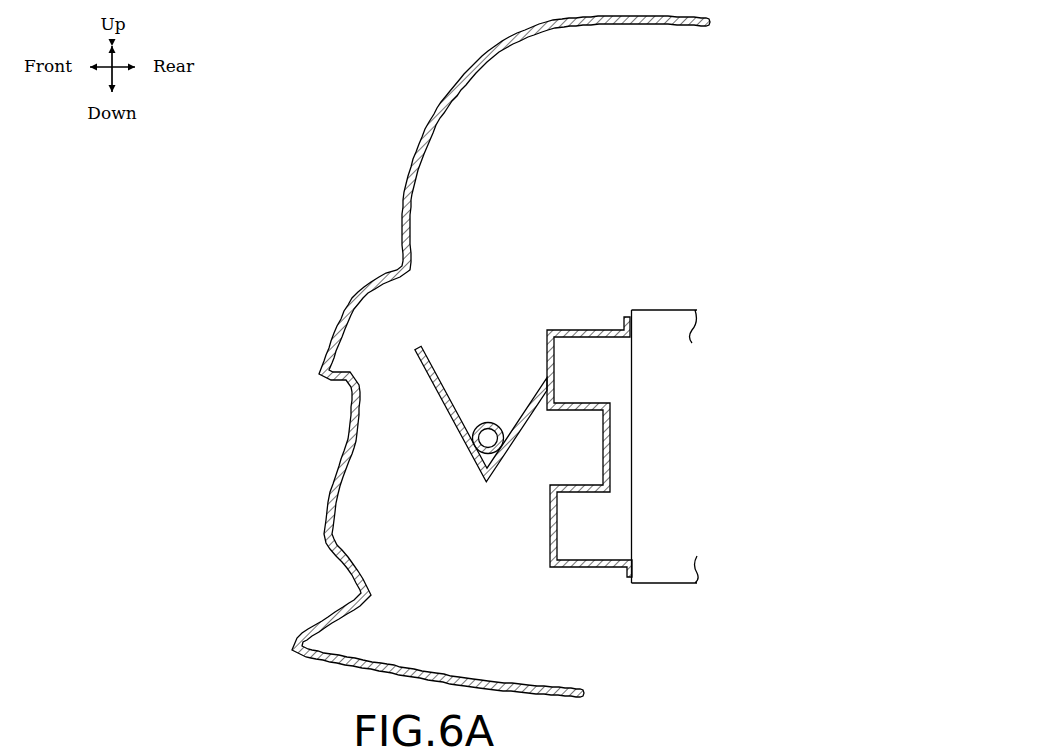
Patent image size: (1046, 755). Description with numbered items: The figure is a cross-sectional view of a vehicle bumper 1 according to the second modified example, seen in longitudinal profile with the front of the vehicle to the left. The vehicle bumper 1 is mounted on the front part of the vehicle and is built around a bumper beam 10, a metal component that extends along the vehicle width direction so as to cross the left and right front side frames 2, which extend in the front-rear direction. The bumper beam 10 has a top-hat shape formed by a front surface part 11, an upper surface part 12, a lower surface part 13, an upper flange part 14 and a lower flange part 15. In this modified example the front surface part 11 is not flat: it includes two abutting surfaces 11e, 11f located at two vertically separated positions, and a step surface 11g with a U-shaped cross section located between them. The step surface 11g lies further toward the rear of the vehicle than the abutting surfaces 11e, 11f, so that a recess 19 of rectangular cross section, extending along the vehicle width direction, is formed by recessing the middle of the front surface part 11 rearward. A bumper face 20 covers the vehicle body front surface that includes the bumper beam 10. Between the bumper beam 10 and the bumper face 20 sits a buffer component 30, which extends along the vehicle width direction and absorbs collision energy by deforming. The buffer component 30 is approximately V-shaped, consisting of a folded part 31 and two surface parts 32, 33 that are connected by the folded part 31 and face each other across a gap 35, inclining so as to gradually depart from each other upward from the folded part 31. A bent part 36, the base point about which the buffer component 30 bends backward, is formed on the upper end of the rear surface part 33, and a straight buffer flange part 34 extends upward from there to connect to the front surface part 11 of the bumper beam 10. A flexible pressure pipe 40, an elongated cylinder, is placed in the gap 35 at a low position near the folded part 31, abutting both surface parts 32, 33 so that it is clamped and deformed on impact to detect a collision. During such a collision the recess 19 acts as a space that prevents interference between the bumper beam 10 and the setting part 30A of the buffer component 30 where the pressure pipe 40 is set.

The vehicle bumper 1 is at (253, 61).
The front side frame 2 is at (680, 308).
The bumper beam 10 is at (565, 316).
The front surface part 11 is at (557, 345).
The abutting surface 11e is at (557, 368).
The abutting surface 11f is at (560, 533).
The step surface 11g is at (612, 442).
The upper surface part 12 is at (600, 328).
The lower surface part 13 is at (592, 568).
The upper flange part 14 is at (630, 325).
The lower flange part 15 is at (632, 570).
The recess 19 is at (606, 474).
The bumper face 20 is at (345, 408).
The buffer component 30 is at (442, 442).
The setting part 30A is at (510, 442).
The folded part 31 is at (486, 482).
The surface part 32 is at (440, 394).
The surface part 33 is at (522, 428).
The buffer flange part 34 is at (547, 353).
The gap 35 is at (500, 395).
The bent part 36 is at (557, 382).
The pressure pipe 40 is at (478, 468).